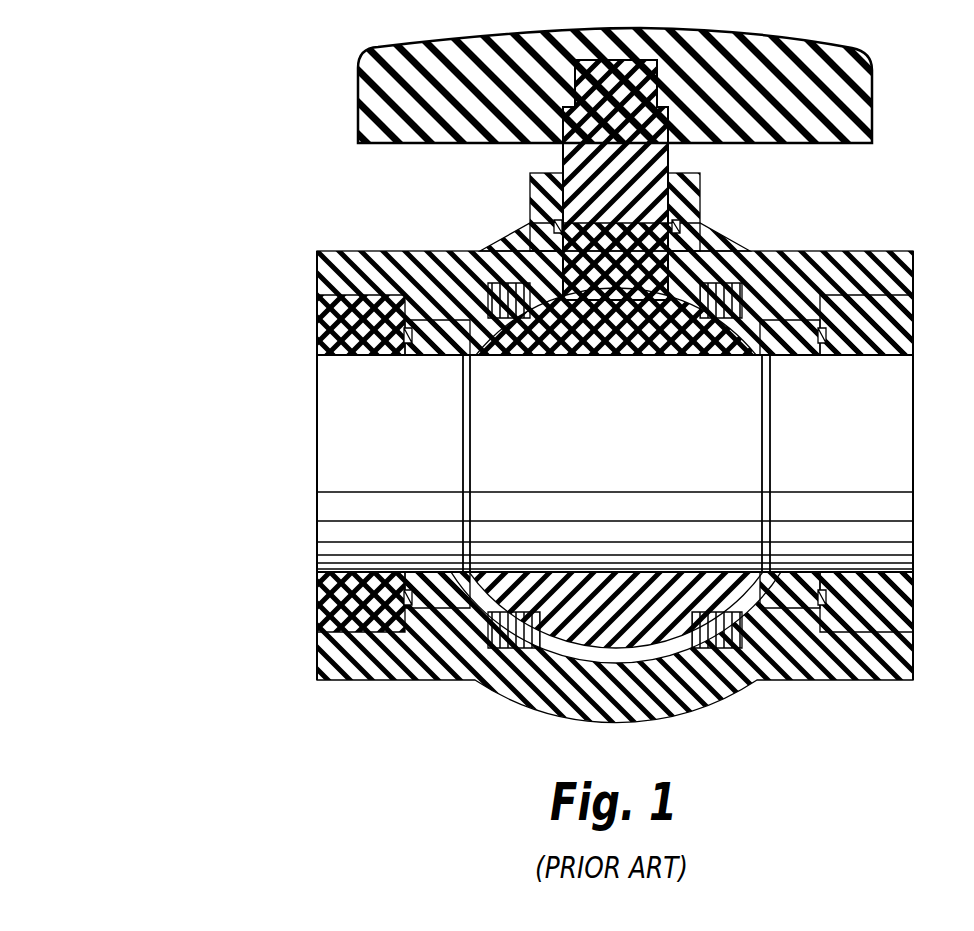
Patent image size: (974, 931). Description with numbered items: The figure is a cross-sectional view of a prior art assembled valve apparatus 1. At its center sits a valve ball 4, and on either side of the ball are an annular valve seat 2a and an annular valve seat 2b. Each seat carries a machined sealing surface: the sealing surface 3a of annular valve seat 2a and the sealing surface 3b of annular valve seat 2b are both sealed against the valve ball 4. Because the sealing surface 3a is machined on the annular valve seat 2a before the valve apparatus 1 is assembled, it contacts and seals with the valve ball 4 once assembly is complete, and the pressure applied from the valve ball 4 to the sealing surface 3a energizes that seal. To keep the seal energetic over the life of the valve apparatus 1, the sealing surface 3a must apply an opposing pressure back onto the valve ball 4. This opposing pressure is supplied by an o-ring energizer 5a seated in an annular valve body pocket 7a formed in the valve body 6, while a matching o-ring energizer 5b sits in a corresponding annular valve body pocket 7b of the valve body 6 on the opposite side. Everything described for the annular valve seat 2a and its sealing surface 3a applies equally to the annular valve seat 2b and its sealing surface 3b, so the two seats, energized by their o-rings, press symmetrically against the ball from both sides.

The valve apparatus 1 is at (252, 140).
The annular valve seat 2a is at (440, 300).
The annular valve seat 2b is at (785, 300).
The sealing surface 3a is at (518, 285).
The sealing surface 3b is at (735, 285).
The valve ball 4 is at (675, 235).
The o-ring energizer 5a is at (366, 250).
The o-ring energizer 5b is at (840, 300).
The valve body 6 is at (318, 255).
The annular valve body pocket 7a is at (404, 330).
The annular valve body pocket 7b is at (828, 330).